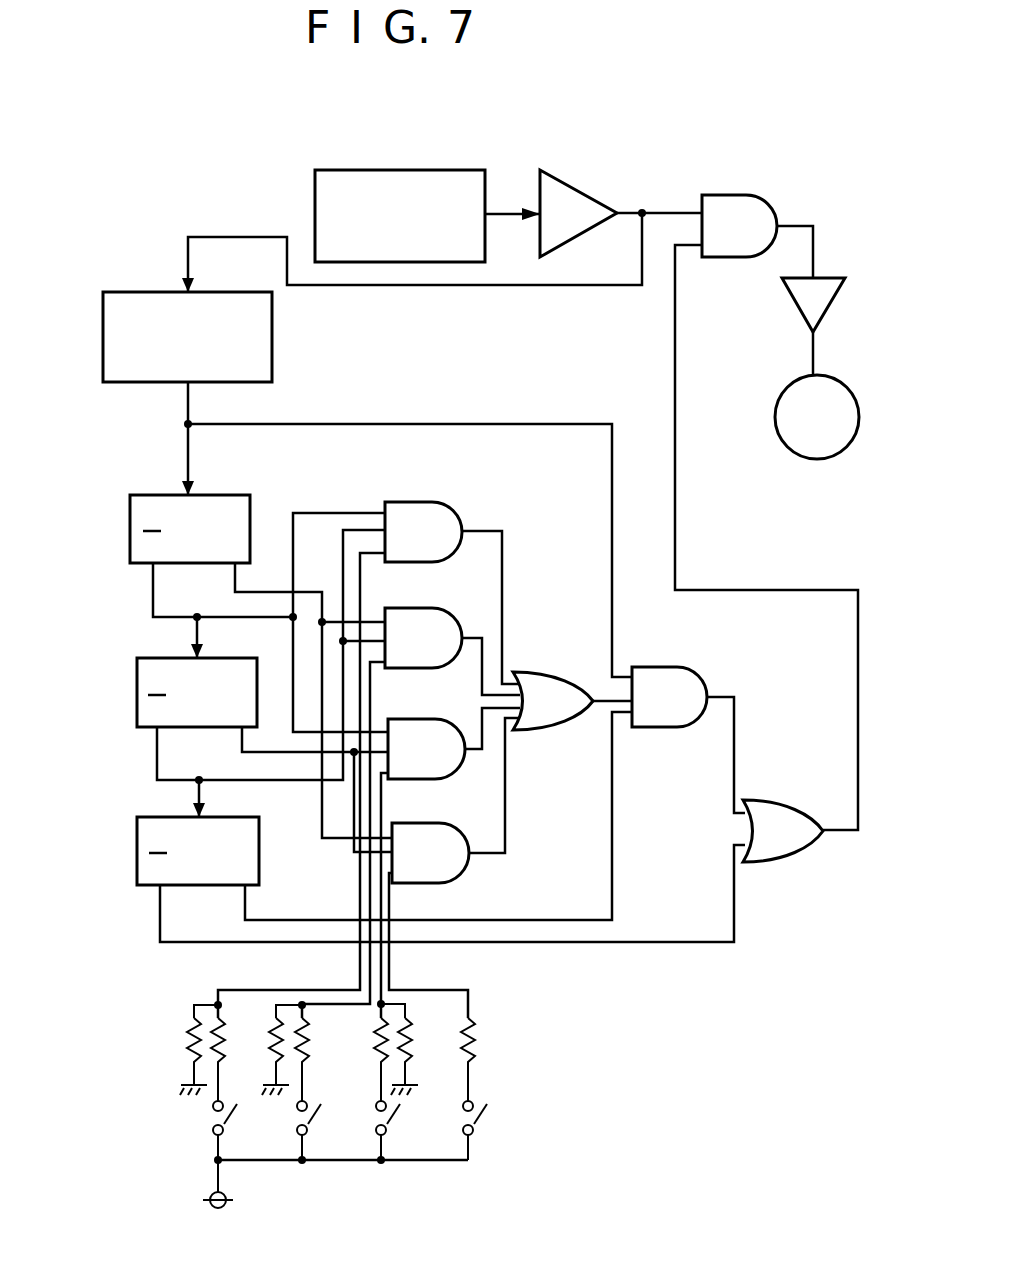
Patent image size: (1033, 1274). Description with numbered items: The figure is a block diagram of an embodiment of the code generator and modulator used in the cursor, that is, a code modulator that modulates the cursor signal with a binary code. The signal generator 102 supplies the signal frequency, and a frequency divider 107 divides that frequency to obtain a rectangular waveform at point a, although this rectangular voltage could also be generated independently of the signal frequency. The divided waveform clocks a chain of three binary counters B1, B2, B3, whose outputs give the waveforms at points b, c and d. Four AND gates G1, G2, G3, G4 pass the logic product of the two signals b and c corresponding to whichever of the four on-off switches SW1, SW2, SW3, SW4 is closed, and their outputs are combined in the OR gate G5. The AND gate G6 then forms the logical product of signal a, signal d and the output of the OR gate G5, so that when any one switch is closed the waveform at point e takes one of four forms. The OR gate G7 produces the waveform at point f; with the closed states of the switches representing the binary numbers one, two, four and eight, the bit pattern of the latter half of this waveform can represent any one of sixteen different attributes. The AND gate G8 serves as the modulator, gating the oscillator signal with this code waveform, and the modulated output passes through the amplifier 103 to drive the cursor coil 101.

The cursor coil 101 is at (836, 378).
The signal generator 102 is at (408, 170).
The amplifier 103 is at (834, 276).
The frequency divider 107 is at (272, 350).
The binary counter B1 is at (130, 542).
The binary counter B2 is at (137, 702).
The binary counter B3 is at (137, 858).
The AND gate G1 is at (423, 532).
The AND gate G2 is at (423, 638).
The AND gate G3 is at (426, 749).
The AND gate G4 is at (430, 853).
The OR gate G5 is at (553, 701).
The AND gate G6 is at (669, 697).
The OR gate G7 is at (783, 831).
The AND gate G8 is at (739, 226).
The on-off switch SW1 is at (206, 1124).
The on-off switch SW2 is at (316, 1122).
The on-off switch SW3 is at (398, 1116).
The on-off switch SW4 is at (482, 1112).